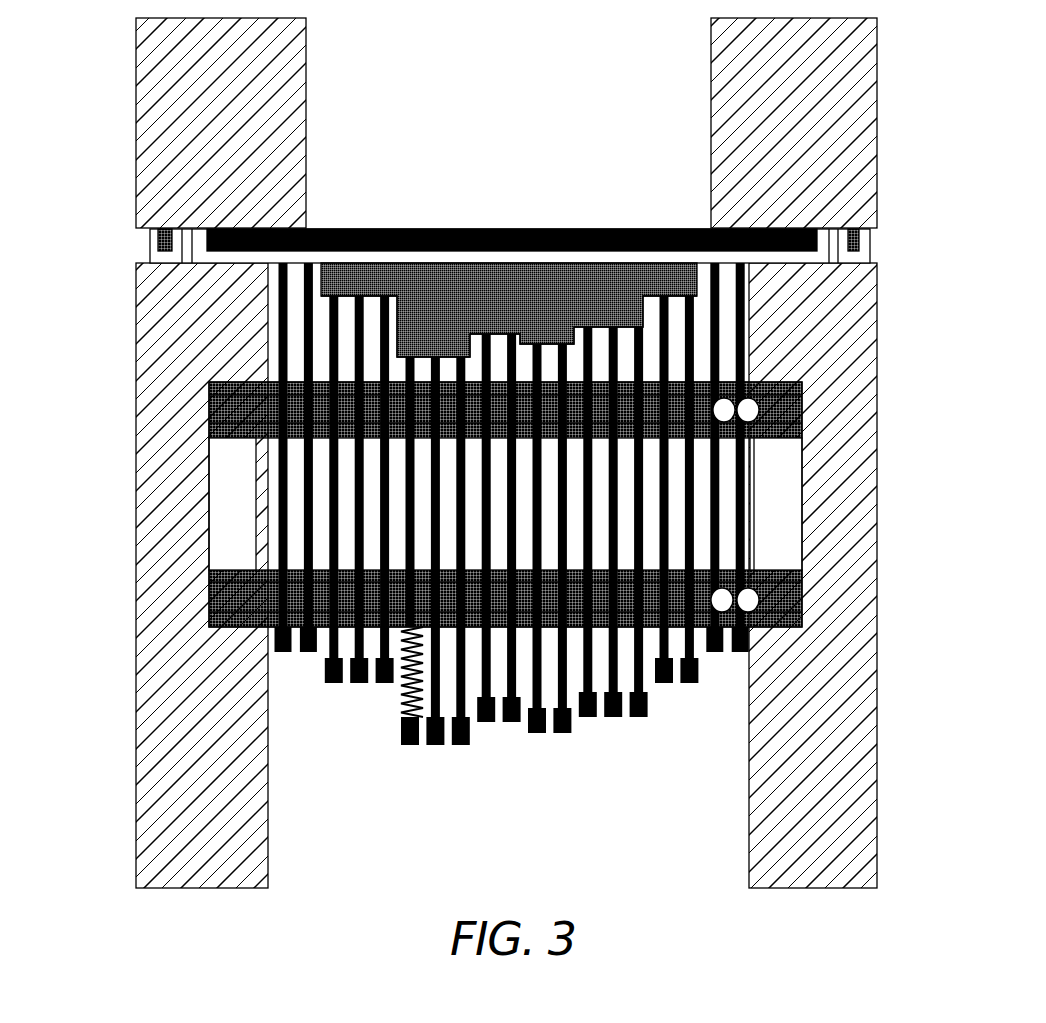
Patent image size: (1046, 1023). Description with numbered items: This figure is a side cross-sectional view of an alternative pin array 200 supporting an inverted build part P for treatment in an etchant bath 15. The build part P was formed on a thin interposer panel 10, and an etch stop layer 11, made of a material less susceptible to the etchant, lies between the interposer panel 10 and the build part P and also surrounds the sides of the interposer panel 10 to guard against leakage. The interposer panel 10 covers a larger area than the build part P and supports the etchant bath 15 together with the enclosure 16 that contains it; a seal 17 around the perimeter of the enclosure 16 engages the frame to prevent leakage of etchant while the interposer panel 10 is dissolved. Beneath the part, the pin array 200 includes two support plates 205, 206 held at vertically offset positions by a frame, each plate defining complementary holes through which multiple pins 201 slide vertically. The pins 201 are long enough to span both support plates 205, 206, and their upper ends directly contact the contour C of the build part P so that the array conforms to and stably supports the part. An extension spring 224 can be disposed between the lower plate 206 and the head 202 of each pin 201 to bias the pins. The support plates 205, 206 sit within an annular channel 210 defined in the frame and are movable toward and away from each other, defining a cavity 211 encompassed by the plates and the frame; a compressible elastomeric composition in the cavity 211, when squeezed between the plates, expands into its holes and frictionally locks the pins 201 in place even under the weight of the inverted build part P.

The interposer panel 10 is at (481, 219).
The etch stop layer 11 is at (524, 252).
The bath 15 is at (515, 120).
The enclosure 16 is at (287, 80).
The seal 17 is at (145, 251).
The build part P is at (625, 271).
The contour C is at (645, 317).
The pin array 200 is at (499, 526).
The pins 201 is at (330, 342).
The head 202 is at (335, 685).
The support plate 205 is at (770, 412).
The support plate 206 is at (770, 603).
The annular channel 210 is at (223, 522).
The cavity 211 is at (788, 503).
The extension spring 224 is at (403, 690).